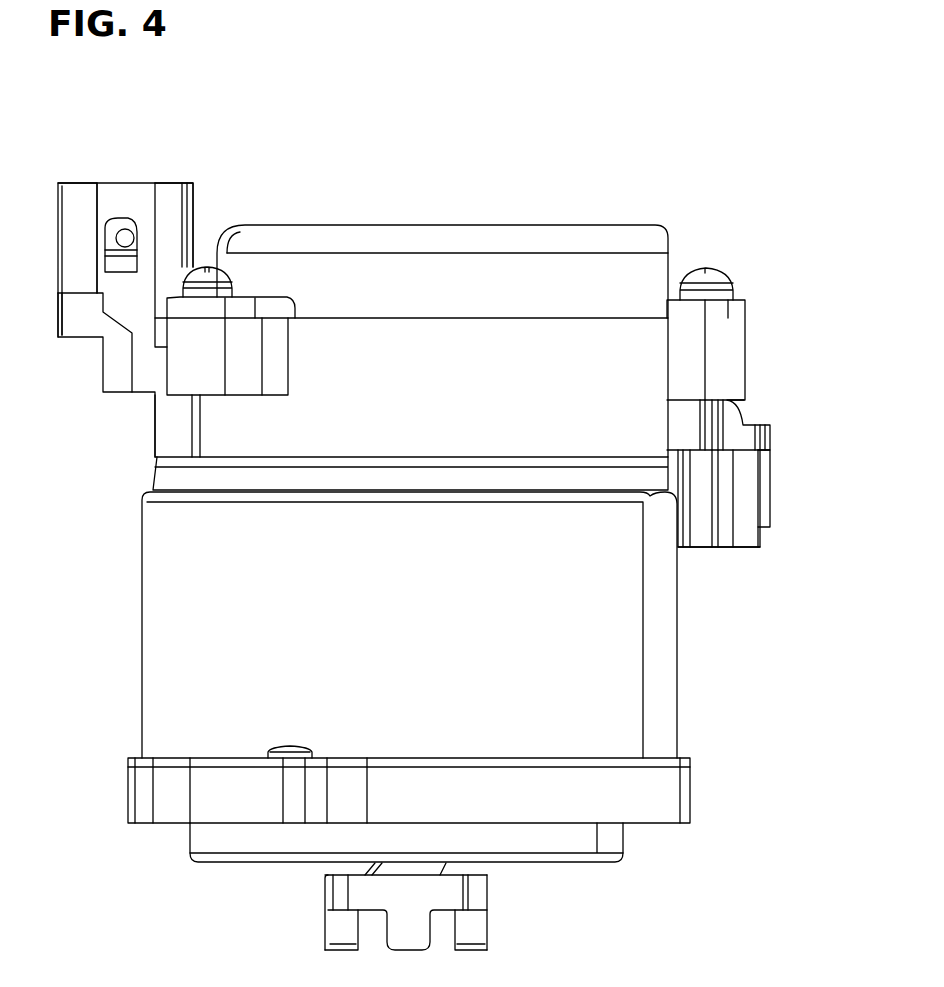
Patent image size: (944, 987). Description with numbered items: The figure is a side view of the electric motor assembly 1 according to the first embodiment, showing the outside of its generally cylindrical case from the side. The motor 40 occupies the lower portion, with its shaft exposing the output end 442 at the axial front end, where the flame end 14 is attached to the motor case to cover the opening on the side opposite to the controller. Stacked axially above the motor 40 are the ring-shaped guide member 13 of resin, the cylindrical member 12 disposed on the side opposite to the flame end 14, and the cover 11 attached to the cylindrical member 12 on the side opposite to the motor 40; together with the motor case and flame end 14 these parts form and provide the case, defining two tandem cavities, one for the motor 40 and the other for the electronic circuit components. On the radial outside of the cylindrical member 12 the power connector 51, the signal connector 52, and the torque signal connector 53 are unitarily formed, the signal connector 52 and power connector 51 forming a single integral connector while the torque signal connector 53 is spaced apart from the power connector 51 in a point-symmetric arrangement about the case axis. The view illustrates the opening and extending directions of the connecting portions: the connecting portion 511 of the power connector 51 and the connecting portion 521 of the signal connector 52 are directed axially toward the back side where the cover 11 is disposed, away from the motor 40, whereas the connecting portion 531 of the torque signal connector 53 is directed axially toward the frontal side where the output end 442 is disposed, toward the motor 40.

The electric motor assembly 1 is at (700, 192).
The cover 11 is at (583, 270).
The cylindrical member 12 is at (163, 423).
The guide member 13 is at (165, 480).
The flame end 14 is at (132, 792).
The motor 40 is at (148, 677).
The output end 442 is at (340, 928).
The power connector 51 is at (55, 252).
The signal connector 52 is at (67, 212).
The torque signal connector 53 is at (752, 472).
The connecting portion 511 is at (145, 183).
The connecting portion 521 is at (90, 183).
The connecting portion 531 is at (742, 548).